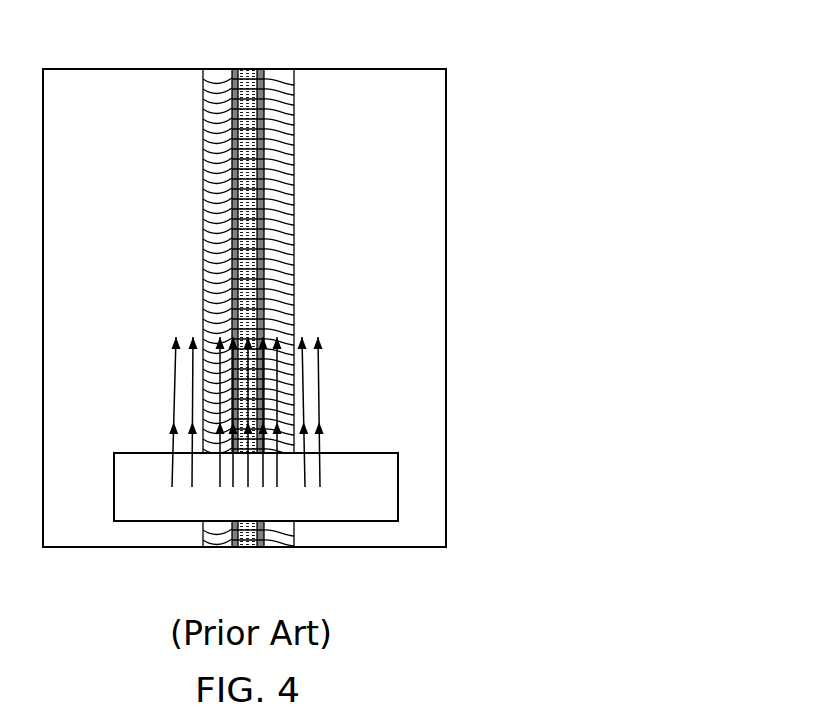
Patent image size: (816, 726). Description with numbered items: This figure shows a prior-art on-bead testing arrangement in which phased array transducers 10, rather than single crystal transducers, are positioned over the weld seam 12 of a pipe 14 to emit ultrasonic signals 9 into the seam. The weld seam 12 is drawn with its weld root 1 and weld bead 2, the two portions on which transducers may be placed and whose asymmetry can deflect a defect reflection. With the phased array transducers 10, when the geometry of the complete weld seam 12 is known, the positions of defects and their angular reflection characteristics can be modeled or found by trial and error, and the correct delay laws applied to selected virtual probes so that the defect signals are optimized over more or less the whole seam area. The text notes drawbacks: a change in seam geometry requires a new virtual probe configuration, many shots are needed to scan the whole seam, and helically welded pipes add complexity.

The weld root 1 is at (249, 67).
The weld bead 2 is at (292, 93).
The ultrasonic signals 9 is at (330, 481).
The phased array transducers 10 is at (160, 523).
The weld seam 12 is at (295, 557).
The pipe 14 is at (446, 484).